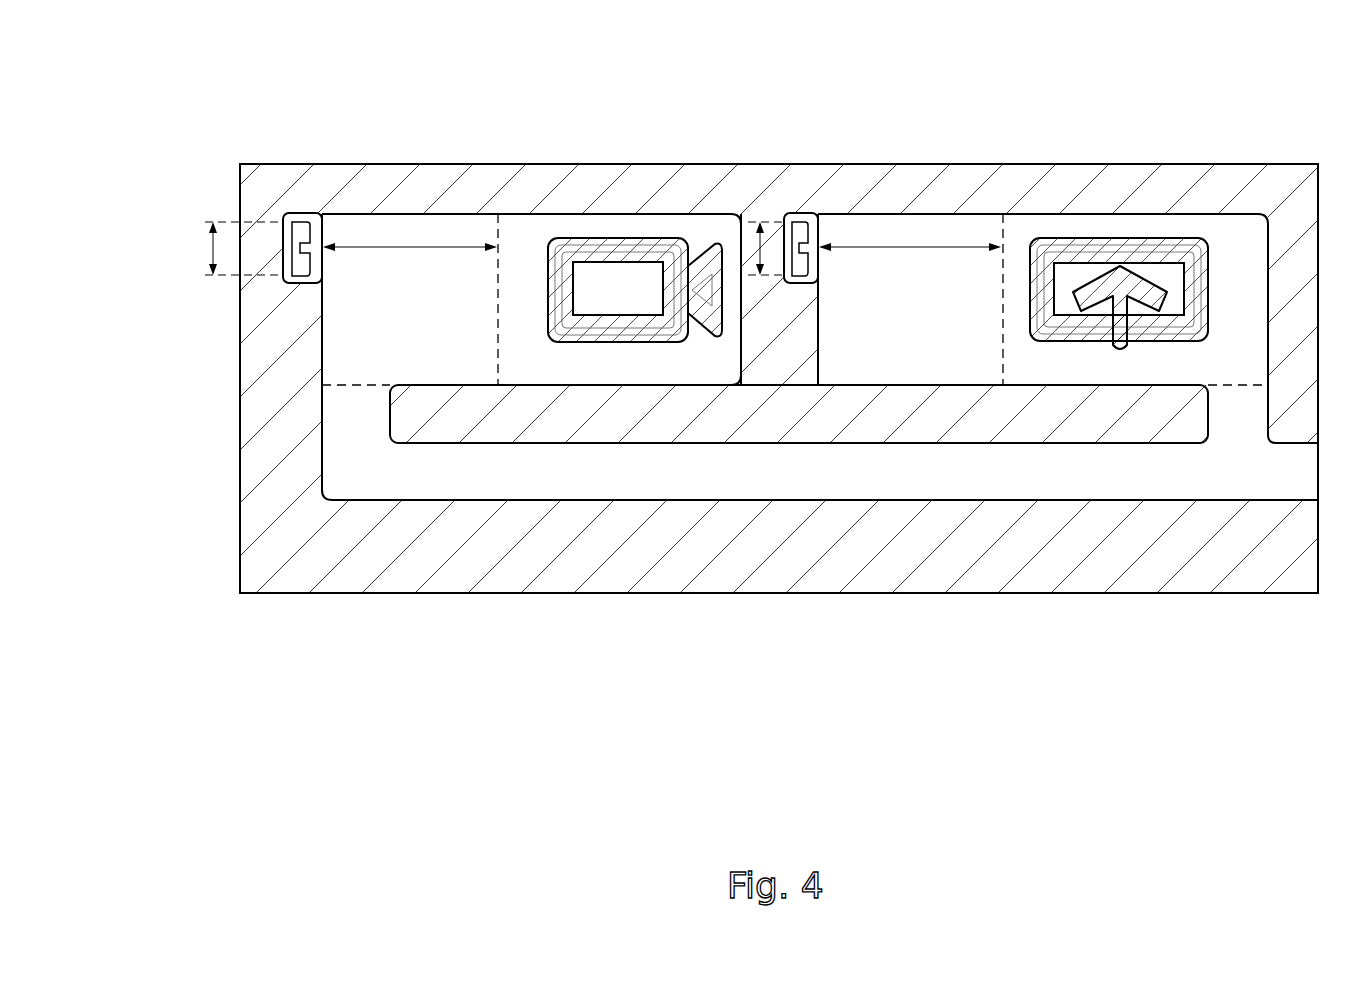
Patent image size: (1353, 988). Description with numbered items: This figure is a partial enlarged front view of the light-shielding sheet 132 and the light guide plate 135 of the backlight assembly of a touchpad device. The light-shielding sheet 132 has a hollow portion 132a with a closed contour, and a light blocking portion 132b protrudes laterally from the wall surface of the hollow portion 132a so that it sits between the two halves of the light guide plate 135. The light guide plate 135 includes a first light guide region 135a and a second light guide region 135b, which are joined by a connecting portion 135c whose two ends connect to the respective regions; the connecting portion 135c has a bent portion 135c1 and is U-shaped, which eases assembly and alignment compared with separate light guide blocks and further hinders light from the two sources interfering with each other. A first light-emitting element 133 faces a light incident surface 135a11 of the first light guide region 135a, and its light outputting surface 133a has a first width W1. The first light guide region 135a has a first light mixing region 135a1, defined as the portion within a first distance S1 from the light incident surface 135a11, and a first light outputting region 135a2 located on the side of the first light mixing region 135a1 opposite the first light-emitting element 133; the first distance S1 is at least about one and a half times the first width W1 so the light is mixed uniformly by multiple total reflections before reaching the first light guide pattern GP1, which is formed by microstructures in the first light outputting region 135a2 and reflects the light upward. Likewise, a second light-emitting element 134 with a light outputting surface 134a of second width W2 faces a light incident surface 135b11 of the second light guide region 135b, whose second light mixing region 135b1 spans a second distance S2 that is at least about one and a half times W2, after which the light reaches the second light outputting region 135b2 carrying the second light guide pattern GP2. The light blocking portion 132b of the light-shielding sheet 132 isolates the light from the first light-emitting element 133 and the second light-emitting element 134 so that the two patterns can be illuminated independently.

The light-shielding sheet 132 is at (1066, 545).
The hollow portion 132a is at (321, 443).
The light blocking portion 132b is at (780, 330).
The first light-emitting element 133 is at (297, 212).
The light outputting surface 133a is at (305, 222).
The second light-emitting element 134 is at (795, 212).
The light outputting surface 134a is at (800, 222).
The light guide plate 135 is at (1170, 460).
The first light guide region 135a is at (587, 77).
The first light mixing region 135a1 is at (418, 214).
The first light outputting region 135a2 is at (512, 228).
The light incident surface 135a11 is at (290, 284).
The second light guide region 135b is at (1090, 77).
The second light mixing region 135b1 is at (922, 222).
The second light outputting region 135b2 is at (1012, 228).
The light incident surface 135b11 is at (806, 300).
The connecting portion 135c is at (522, 480).
The bent portion 135c1 is at (388, 483).
The first light guide pattern GP1 is at (625, 240).
The second light guide pattern GP2 is at (1148, 240).
The first distance S1 is at (410, 263).
The second distance S2 is at (910, 263).
The first width W1 is at (223, 248).
The second width W2 is at (758, 218).